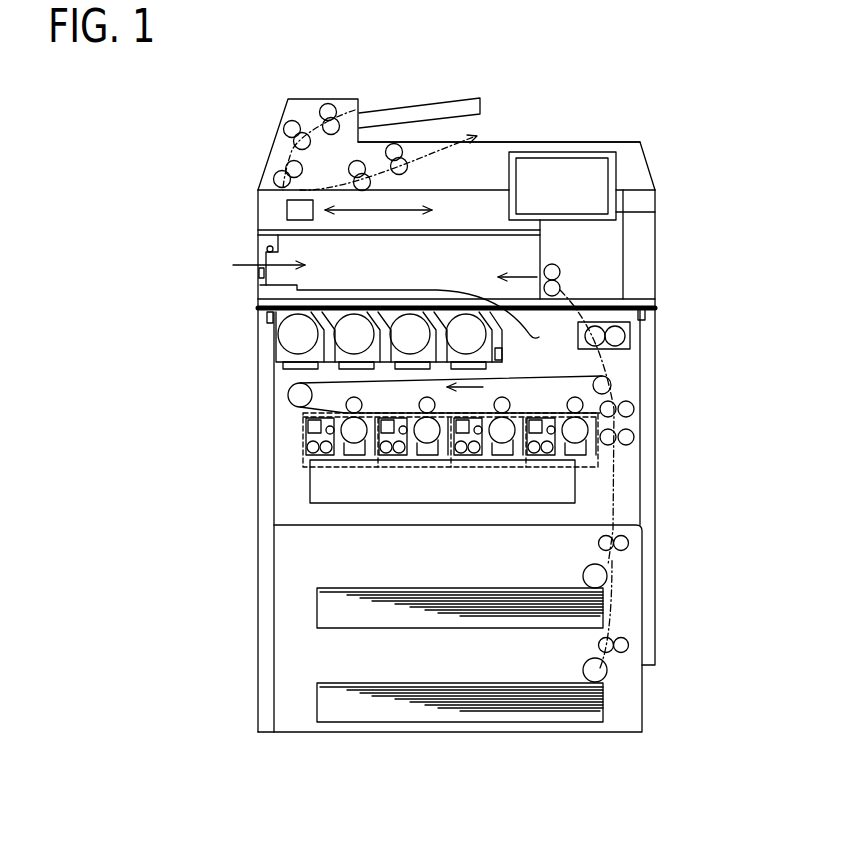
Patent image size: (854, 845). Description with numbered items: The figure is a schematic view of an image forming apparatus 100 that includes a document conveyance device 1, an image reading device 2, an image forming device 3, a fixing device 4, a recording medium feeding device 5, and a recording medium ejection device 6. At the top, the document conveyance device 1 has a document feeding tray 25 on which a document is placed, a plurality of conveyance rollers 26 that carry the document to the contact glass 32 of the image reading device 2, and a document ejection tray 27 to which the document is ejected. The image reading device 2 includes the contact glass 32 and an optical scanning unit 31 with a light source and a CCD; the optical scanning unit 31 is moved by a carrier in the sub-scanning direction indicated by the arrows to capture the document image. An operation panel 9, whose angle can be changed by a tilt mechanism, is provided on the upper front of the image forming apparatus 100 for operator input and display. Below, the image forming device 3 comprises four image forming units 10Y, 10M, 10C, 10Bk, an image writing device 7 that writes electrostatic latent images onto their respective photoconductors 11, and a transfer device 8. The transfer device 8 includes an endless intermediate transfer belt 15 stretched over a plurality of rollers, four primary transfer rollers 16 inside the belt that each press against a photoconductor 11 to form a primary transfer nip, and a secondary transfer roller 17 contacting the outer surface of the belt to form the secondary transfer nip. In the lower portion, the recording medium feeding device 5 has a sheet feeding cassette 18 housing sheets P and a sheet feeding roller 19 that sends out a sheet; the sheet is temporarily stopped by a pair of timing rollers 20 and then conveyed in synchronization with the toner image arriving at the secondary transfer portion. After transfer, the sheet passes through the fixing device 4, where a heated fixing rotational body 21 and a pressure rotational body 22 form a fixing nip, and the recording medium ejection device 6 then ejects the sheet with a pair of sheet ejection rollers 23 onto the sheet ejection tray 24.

The image forming apparatus 100 is at (679, 108).
The document conveyance device 1 is at (272, 142).
The image reading device 2 is at (257, 214).
The image forming device 3 is at (290, 436).
The fixing device 4 is at (647, 345).
The recording medium feeding device 5 is at (258, 625).
The recording medium ejection device 6 is at (261, 260).
The image writing device 7 is at (310, 482).
The transfer device 8 is at (632, 392).
The operation panel 9 is at (580, 168).
The image forming unit 10Y is at (362, 445).
The image forming unit 10M is at (437, 445).
The image forming unit 10C is at (508, 445).
The image forming unit 10Bk is at (568, 448).
The photoconductor 11 is at (584, 448).
The intermediate transfer belt 15 is at (521, 378).
The primary transfer roller 16 is at (421, 400).
The secondary transfer roller 17 is at (637, 408).
The sheet feeding cassette 18 is at (378, 620).
The sheet feeding roller 19 is at (583, 570).
The timing rollers 20 is at (634, 439).
The fixing rotational body 21 is at (595, 347).
The pressure rotational body 22 is at (618, 335).
The sheet ejection rollers 23 is at (560, 285).
The sheet ejection tray 24 is at (383, 286).
The document feeding tray 25 is at (413, 107).
The conveyance rollers 26 is at (298, 126).
The document ejection tray 27 is at (522, 141).
The optical scanning unit 31 is at (287, 212).
The contact glass 32 is at (447, 183).
The sheet P is at (398, 591).